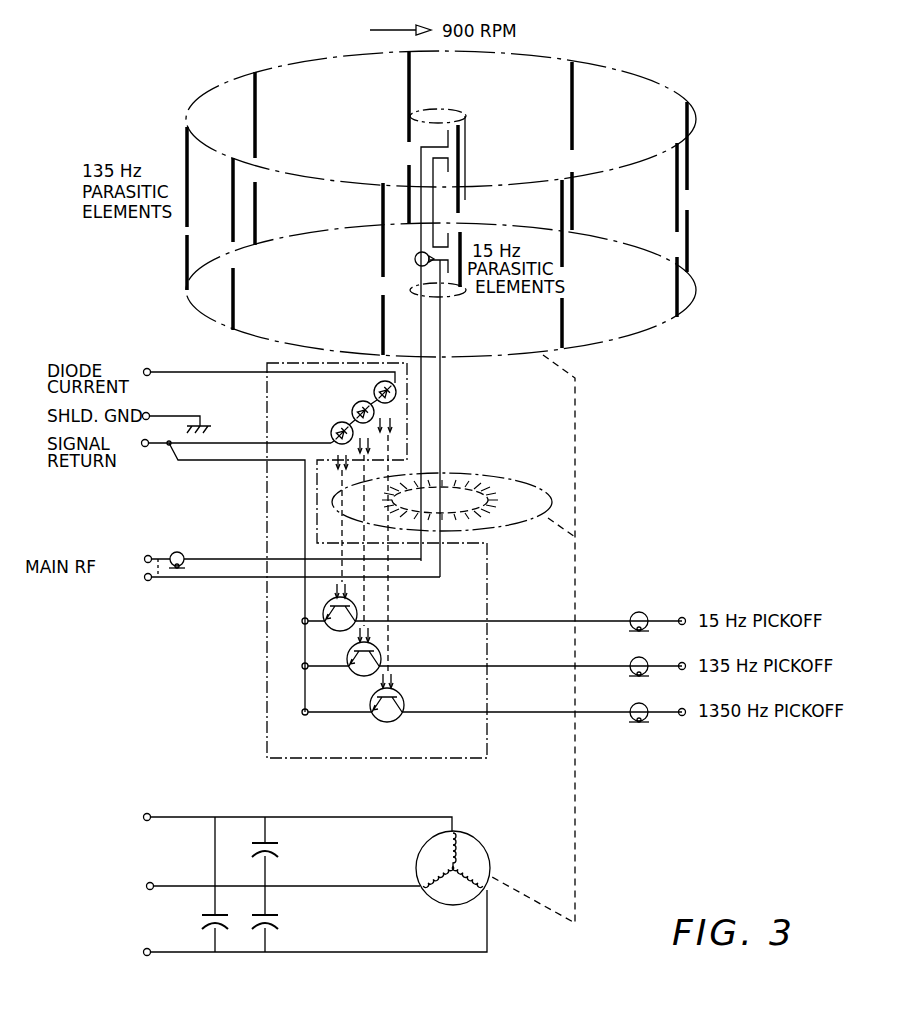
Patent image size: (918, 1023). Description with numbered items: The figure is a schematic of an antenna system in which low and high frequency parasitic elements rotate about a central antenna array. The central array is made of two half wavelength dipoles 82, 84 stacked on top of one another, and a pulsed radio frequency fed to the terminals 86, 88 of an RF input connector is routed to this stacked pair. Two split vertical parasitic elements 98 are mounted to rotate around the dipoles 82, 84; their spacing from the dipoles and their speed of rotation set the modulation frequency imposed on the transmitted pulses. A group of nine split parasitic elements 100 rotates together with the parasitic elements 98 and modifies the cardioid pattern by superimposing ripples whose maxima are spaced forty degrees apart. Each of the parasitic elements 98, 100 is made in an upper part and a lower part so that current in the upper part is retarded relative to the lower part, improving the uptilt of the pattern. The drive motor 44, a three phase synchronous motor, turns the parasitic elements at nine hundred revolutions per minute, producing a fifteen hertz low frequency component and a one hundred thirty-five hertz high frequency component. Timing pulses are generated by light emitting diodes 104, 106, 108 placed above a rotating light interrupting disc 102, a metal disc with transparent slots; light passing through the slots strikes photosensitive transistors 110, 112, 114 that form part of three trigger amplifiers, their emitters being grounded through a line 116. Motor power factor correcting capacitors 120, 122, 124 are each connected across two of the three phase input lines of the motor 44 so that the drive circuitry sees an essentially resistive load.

The split parasitic elements 100 is at (255, 98).
The half wavelength dipole 82 is at (445, 153).
The split vertical parasitic elements 98 is at (463, 178).
The half wavelength dipole 84 is at (445, 255).
The light interrupting disc 102 is at (500, 475).
The light emitting diode 104 is at (331, 430).
The light emitting diode 106 is at (352, 410).
The light emitting diode 108 is at (375, 387).
The photosensitive transistor 110 is at (324, 605).
The photosensitive transistor 112 is at (349, 654).
The photosensitive transistor 114 is at (372, 698).
The line 116 is at (200, 462).
The terminal 86 is at (145, 553).
The terminal 88 is at (145, 582).
The motor power factor correcting capacitor 120 is at (282, 848).
The motor power factor correcting capacitor 122 is at (200, 924).
The motor power factor correcting capacitor 124 is at (282, 922).
The drive motor 44 is at (484, 867).